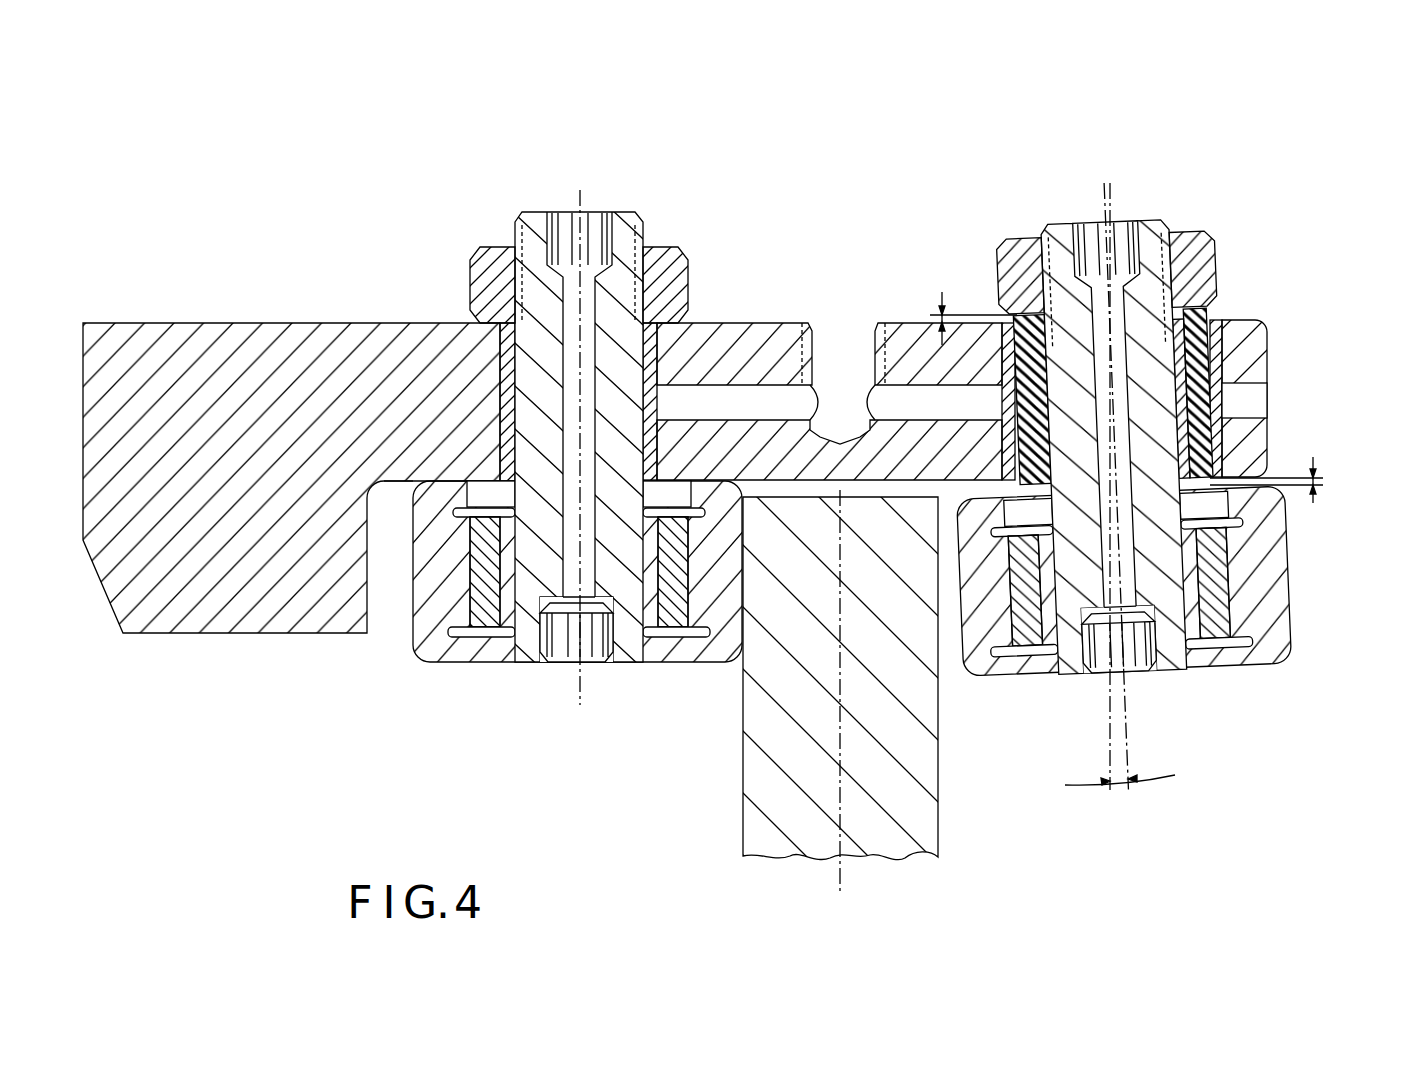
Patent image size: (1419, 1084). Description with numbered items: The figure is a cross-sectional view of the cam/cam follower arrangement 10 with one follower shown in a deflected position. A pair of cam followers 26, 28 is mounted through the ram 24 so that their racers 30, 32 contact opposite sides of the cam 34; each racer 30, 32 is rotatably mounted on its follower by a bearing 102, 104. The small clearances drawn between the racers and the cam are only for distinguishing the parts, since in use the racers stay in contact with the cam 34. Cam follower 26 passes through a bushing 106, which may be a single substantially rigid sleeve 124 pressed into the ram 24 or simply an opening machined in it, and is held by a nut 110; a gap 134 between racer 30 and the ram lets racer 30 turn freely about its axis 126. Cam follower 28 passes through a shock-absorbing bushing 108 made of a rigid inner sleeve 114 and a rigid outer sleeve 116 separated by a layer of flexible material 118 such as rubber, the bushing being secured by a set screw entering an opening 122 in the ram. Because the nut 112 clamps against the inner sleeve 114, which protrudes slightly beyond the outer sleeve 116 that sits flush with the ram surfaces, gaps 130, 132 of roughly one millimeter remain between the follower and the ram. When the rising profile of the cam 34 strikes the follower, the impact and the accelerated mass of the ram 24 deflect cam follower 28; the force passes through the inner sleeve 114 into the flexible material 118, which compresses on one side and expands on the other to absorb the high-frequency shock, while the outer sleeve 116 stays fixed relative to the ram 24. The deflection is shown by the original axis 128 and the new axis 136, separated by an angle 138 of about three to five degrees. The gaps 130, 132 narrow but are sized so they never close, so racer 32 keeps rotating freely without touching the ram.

The cam/cam follower arrangement 10 is at (400, 130).
The ram 24 is at (140, 320).
The cam follower 26 is at (618, 208).
The cam follower 28 is at (1145, 218).
The racer 30 is at (435, 584).
The racer 32 is at (1290, 525).
The cam 34 is at (940, 818).
The bearing 102 is at (455, 615).
The bearing 104 is at (1212, 588).
The bushing 106 is at (318, 345).
The bushing 108 is at (1225, 316).
The nut 110 is at (487, 244).
The nut 112 is at (1022, 243).
The inner sleeve 114 is at (1216, 240).
The outer sleeve 116 is at (1237, 343).
The flexible material 118 is at (1215, 312).
The opening 122 is at (1270, 400).
The sleeve 124 is at (667, 340).
The axis 126 is at (598, 678).
The axis 128 is at (1107, 723).
The gap 130 is at (925, 315).
The gap 132 is at (1327, 482).
The gap 134 is at (393, 490).
The axis 136 is at (840, 870).
The angle 138 is at (1120, 790).